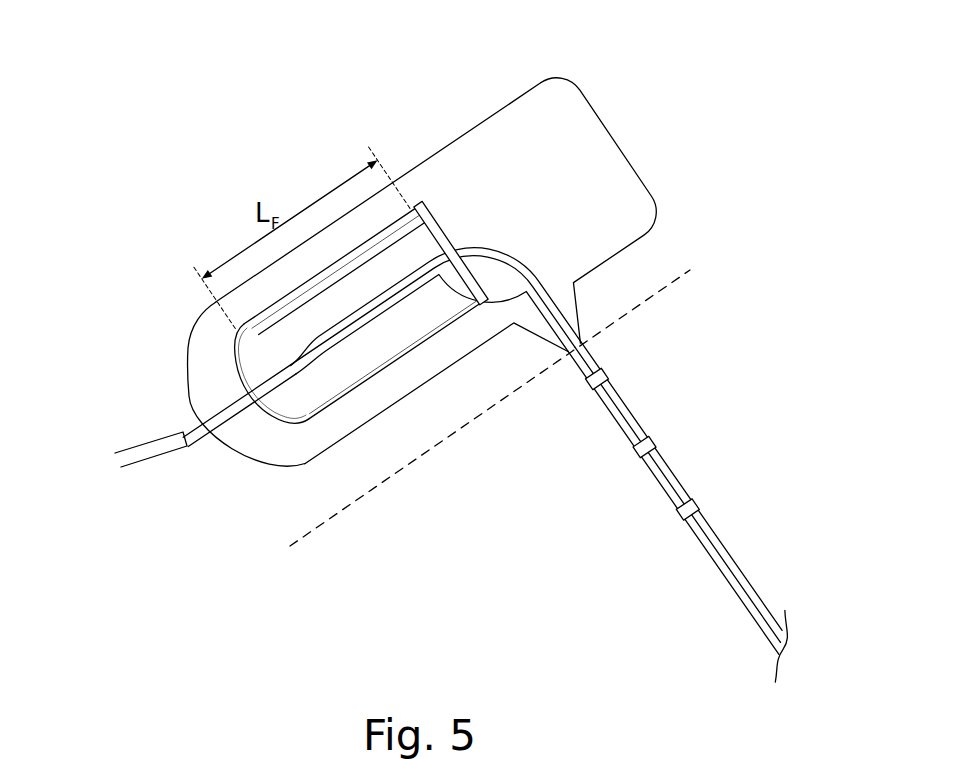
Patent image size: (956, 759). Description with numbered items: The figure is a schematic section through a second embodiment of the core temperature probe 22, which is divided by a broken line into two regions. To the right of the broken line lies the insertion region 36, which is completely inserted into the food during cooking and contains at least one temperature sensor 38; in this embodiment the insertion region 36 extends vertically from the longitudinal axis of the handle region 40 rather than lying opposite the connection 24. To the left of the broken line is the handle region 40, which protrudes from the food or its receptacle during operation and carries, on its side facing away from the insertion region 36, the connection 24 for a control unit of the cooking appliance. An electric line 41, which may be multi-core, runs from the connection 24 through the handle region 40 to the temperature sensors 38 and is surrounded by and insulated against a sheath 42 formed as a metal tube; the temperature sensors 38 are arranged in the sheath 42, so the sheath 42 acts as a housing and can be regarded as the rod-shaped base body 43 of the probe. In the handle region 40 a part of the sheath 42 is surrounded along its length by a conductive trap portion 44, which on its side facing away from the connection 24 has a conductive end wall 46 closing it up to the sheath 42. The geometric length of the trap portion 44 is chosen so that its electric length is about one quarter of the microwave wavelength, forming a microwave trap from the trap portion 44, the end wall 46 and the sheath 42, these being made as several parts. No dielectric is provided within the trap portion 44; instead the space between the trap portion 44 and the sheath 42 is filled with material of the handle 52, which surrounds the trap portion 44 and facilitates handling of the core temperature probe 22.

The core temperature probe 22 is at (268, 134).
The connection 24 is at (145, 445).
The insertion region 36 is at (752, 495).
The temperature sensor 38 is at (601, 380).
The handle region 40 is at (352, 135).
The electric line 41 is at (584, 360).
The sheath 42 is at (553, 303).
The rod-shaped base body 43 is at (240, 389).
The trap portion 44 is at (335, 396).
The end wall 46 is at (460, 298).
The handle 52 is at (600, 150).